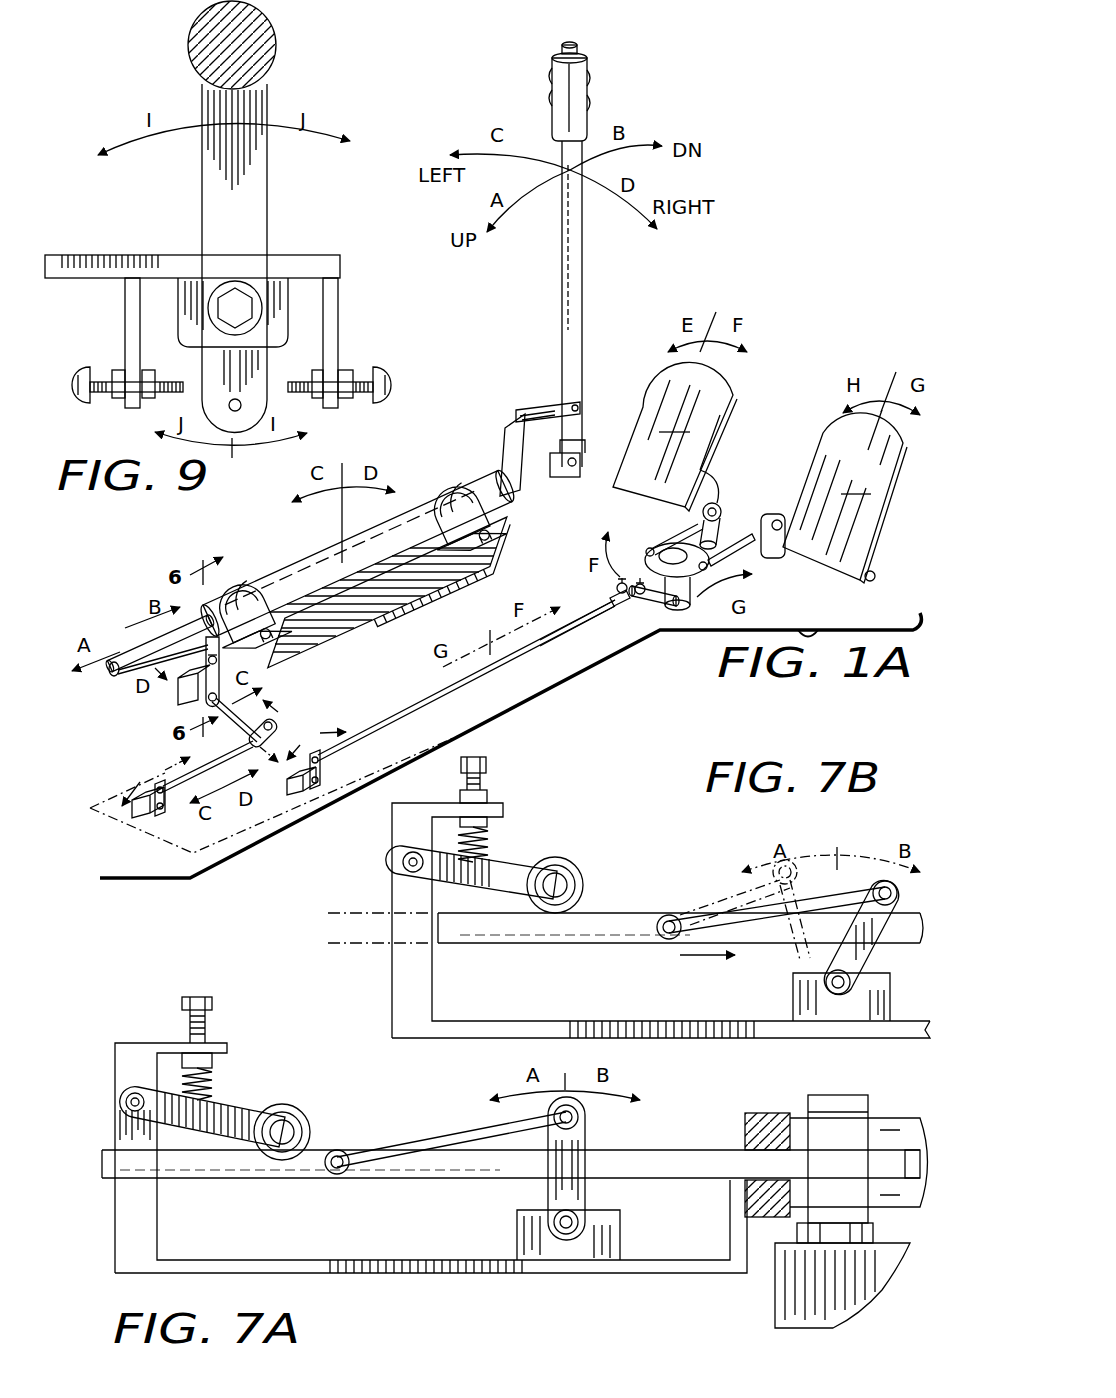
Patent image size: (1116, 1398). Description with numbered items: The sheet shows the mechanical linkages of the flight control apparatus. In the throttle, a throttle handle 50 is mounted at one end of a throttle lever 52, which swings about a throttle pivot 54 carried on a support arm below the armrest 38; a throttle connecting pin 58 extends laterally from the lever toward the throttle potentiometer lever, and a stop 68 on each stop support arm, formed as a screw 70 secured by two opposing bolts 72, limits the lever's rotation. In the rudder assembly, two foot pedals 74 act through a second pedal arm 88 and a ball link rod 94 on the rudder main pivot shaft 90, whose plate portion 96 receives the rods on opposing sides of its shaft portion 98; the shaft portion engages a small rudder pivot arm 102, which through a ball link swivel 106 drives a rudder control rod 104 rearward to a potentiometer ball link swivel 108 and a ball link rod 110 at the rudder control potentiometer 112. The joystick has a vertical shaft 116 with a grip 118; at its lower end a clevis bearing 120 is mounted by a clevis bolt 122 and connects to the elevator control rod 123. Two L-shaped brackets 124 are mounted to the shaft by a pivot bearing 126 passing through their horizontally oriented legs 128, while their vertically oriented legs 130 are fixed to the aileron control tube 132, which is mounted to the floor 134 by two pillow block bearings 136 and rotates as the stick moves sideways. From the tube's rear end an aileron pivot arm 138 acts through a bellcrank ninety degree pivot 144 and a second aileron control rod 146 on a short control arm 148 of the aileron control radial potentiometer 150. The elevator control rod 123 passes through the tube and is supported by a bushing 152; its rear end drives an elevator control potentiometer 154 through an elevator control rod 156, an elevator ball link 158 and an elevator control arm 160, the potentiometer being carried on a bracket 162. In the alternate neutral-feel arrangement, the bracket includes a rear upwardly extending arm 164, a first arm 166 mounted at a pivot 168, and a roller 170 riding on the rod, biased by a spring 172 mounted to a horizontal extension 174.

In FIG. 9, the armrest 38 is at (147, 231).
In FIG. 9, the throttle handle 50 is at (272, 32).
In FIG. 9, the throttle lever 52 is at (253, 191).
In FIG. 9, the throttle pivot 54 is at (234, 300).
In FIG. 9, the throttle connecting pin 58 is at (247, 380).
In FIG. 9, the stop 68 is at (346, 367).
In FIG. 9, the screw 70 is at (366, 379).
In FIG. 9, the bolts 72 is at (347, 397).
In FIG. 1A, the foot pedals 74 is at (760, 472).
In FIG. 1A, the second pedal arm 88 is at (772, 558).
In FIG. 1A, the rudder main pivot shaft 90 is at (668, 548).
In FIG. 1A, the ball link rod 94 is at (735, 547).
In FIG. 1A, the plate portion 96 is at (675, 601).
In FIG. 1A, the shaft portion 98 is at (643, 600).
In FIG. 1A, the small rudder pivot arm 102 is at (614, 607).
In FIG. 1A, the rudder control rod 104 is at (405, 735).
In FIG. 1A, the ball link swivel 106 is at (615, 597).
In FIG. 1A, the potentiometer ball link swivel 108 is at (318, 752).
In FIG. 1A, the ball link rod 110 is at (328, 765).
In FIG. 1A, the rudder control potentiometer 112 is at (262, 808).
In FIG. 1A, the vertical shaft 116 is at (583, 269).
In FIG. 1A, the grip 118 is at (588, 72).
In FIG. 1A, the clevis bearing 120 is at (566, 478).
In FIG. 1A, the clevis bolt 122 is at (582, 478).
In FIG. 1A, the elevator control rod 123 is at (122, 658).
In FIG. 7B, the elevator control rod 123 is at (472, 932).
In FIG. 7A, the elevator control rod 123 is at (195, 1162).
In FIG. 1A, the L-shaped brackets 124 is at (506, 430).
In FIG. 1A, the pivot bearing 126 is at (577, 409).
In FIG. 1A, the horizontally oriented legs 128 is at (534, 410).
In FIG. 1A, the vertically oriented legs 130 is at (505, 452).
In FIG. 1A, the aileron control tube 132 is at (399, 527).
In FIG. 7A, the aileron control tube 132 is at (877, 1118).
In FIG. 1A, the floor 134 is at (388, 595).
In FIG. 7A, the floor 134 is at (842, 1285).
In FIG. 1A, the pillow block bearings 136 is at (242, 582).
In FIG. 7A, the pillow block bearings 136 is at (846, 1095).
In FIG. 1A, the aileron pivot arm 138 is at (172, 741).
In FIG. 1A, the bellcrank 90° pivot 144 is at (273, 729).
In FIG. 1A, the second aileron control rod 146 is at (173, 795).
In FIG. 1A, the short control arm 148 is at (153, 788).
In FIG. 1A, the aileron control radial potentiometer 150 is at (133, 812).
In FIG. 7A, the bushing 152 is at (738, 1128).
In FIG. 1A, the elevator control potentiometer 154 is at (180, 688).
In FIG. 7B, the elevator control potentiometer 154 is at (800, 1005).
In FIG. 7A, the elevator control potentiometer 154 is at (617, 1222).
In FIG. 1A, the elevator control rod 156 is at (120, 674).
In FIG. 7B, the elevator control rod 156 is at (760, 893).
In FIG. 7A, the elevator control rod 156 is at (405, 1133).
In FIG. 1A, the elevator ball link 158 is at (284, 608).
In FIG. 7B, the elevator ball link 158 is at (871, 888).
In FIG. 7A, the elevator ball link 158 is at (557, 1135).
In FIG. 1A, the elevator control arm 160 is at (222, 648).
In FIG. 7B, the elevator control arm 160 is at (860, 950).
In FIG. 7A, the elevator control arm 160 is at (583, 1132).
In FIG. 1A, the bracket 162 is at (207, 664).
In FIG. 7A, the bracket 162 is at (488, 1266).
In FIG. 7B, the rear upwardly extending arm 164 is at (402, 985).
In FIG. 7A, the rear upwardly extending arm 164 is at (128, 1220).
In FIG. 7B, the first arm 166 is at (494, 877).
In FIG. 7A, the first arm 166 is at (228, 1108).
In FIG. 7B, the pivot 168 is at (398, 868).
In FIG. 7A, the pivot 168 is at (120, 1098).
In FIG. 7B, the roller 170 is at (577, 857).
In FIG. 7A, the roller 170 is at (290, 1105).
In FIG. 7B, the spring 172 is at (489, 835).
In FIG. 7A, the spring 172 is at (212, 1083).
In FIG. 7B, the horizontal extension 174 is at (495, 802).
In FIG. 7A, the horizontal extension 174 is at (172, 1041).